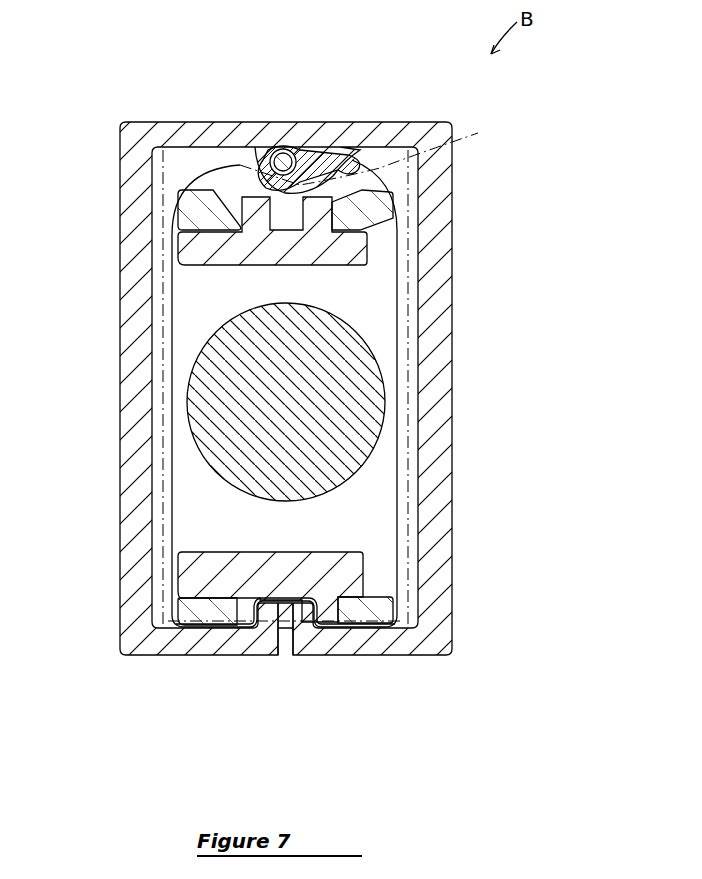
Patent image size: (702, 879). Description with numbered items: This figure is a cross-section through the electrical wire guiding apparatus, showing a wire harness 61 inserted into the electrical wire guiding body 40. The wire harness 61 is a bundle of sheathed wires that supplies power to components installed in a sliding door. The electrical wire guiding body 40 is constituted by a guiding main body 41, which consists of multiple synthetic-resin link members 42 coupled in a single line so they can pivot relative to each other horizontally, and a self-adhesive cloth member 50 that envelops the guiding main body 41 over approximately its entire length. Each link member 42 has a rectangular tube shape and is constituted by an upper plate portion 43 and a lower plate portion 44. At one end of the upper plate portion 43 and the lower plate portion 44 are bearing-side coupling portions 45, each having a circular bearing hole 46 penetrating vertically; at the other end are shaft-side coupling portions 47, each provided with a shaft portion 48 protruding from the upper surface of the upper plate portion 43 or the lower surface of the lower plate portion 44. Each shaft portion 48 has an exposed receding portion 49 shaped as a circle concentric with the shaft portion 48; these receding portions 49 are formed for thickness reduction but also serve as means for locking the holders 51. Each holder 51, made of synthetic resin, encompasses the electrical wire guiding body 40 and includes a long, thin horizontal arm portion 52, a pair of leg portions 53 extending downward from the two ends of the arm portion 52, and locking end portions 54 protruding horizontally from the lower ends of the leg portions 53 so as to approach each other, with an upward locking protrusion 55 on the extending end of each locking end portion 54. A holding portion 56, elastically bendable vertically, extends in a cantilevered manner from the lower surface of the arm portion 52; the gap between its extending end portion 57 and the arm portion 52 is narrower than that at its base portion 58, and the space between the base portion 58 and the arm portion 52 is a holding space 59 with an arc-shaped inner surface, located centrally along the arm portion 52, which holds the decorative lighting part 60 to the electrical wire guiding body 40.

The electrical wire guiding body 40 is at (178, 166).
The guiding main body 41 is at (178, 233).
The link member 42 is at (396, 500).
The upper plate portion 43 is at (195, 203).
The lower plate portion 44 is at (200, 566).
The bearing-side coupling portion 45 is at (370, 204).
The bearing hole 46 is at (326, 228).
The shaft-side coupling portion 47 is at (322, 262).
The shaft portion 48 is at (246, 200).
The receding portion 49 is at (268, 612).
The self-adhesive cloth member 50 is at (455, 140).
The holder 51 is at (446, 122).
The arm portion 52 is at (373, 128).
The leg portion 53 is at (124, 400).
The locking end portion 54 is at (202, 650).
The locking protrusion 55 is at (335, 612).
The holding portion 56 is at (320, 170).
The extending end portion 57 is at (348, 156).
The base portion 58 is at (268, 195).
The holding space 59 is at (290, 150).
The decorative lighting part 60 is at (280, 152).
The wire harness 61 is at (245, 348).